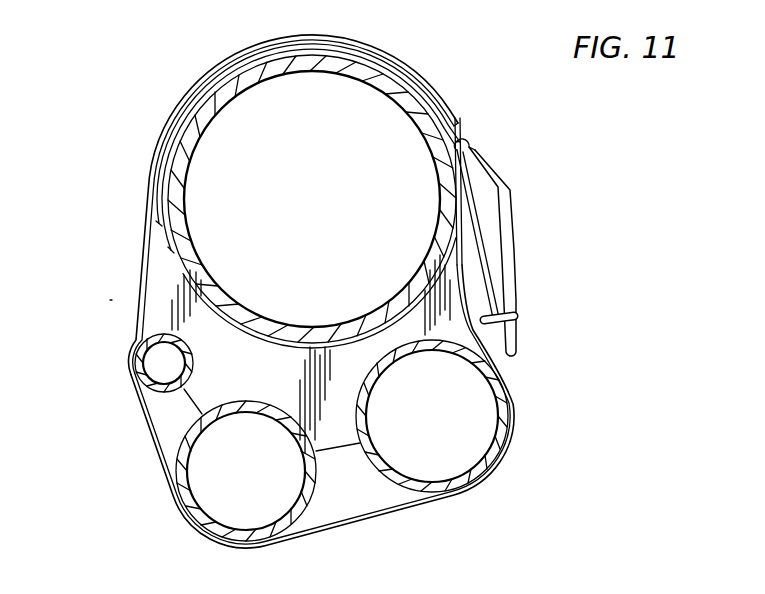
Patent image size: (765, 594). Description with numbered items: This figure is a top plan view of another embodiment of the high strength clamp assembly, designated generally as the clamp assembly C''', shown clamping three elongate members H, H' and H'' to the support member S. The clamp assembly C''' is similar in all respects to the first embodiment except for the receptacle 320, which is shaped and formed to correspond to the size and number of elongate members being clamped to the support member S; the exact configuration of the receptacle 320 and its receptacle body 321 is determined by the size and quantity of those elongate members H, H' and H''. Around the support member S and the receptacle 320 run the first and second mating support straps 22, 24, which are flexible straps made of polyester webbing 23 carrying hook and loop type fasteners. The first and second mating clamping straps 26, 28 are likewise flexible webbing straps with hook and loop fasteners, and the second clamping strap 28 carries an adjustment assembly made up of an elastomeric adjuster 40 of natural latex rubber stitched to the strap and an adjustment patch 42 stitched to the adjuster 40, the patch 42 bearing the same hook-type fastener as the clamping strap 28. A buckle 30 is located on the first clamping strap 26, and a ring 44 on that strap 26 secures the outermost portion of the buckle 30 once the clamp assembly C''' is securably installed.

The support member S is at (261, 79).
The webbing 23 is at (440, 242).
The elastomeric adjuster 40 is at (192, 108).
The adjustment patch 42 is at (163, 148).
The first mating support strap 22 is at (165, 212).
The first mating clamping strap 26 is at (362, 517).
The clamp assembly C''' is at (105, 279).
The elongate member H is at (137, 377).
The receptacle 320 is at (200, 397).
The elongate member H' is at (236, 488).
The receptacle body 321 is at (338, 440).
The elongate member H'' is at (446, 434).
The second mating clamping strap 28 is at (465, 138).
The second mating support strap 24 is at (460, 230).
The buckle 30 is at (518, 257).
The ring 44 is at (519, 317).